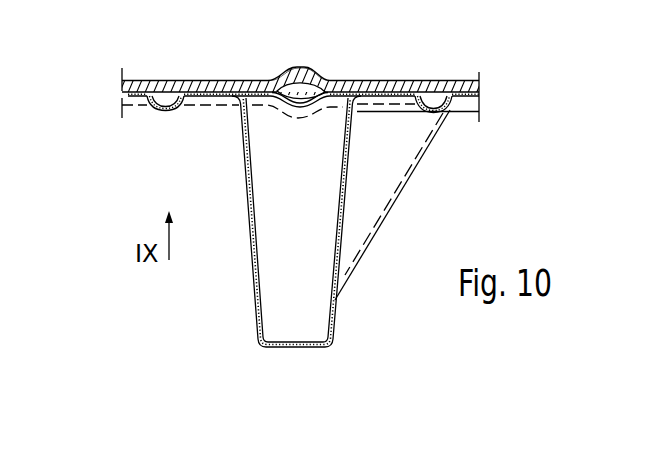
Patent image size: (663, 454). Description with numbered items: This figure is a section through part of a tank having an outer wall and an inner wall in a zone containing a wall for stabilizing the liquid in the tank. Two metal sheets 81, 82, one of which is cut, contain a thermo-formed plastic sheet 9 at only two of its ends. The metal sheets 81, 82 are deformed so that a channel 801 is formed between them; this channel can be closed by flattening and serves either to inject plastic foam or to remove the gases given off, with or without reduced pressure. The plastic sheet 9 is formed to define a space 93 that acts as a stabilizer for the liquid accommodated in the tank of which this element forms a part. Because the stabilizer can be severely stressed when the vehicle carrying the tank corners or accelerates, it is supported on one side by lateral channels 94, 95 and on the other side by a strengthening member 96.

The metal sheet 81 is at (123, 85).
The metal sheet 82 is at (128, 102).
The channel 801 is at (303, 93).
The thermo-formed plastic sheet 9 is at (223, 97).
The lateral channel 95 is at (168, 95).
The lateral channel 94 is at (433, 100).
The space 93 is at (280, 260).
The strengthening member 96 is at (405, 182).